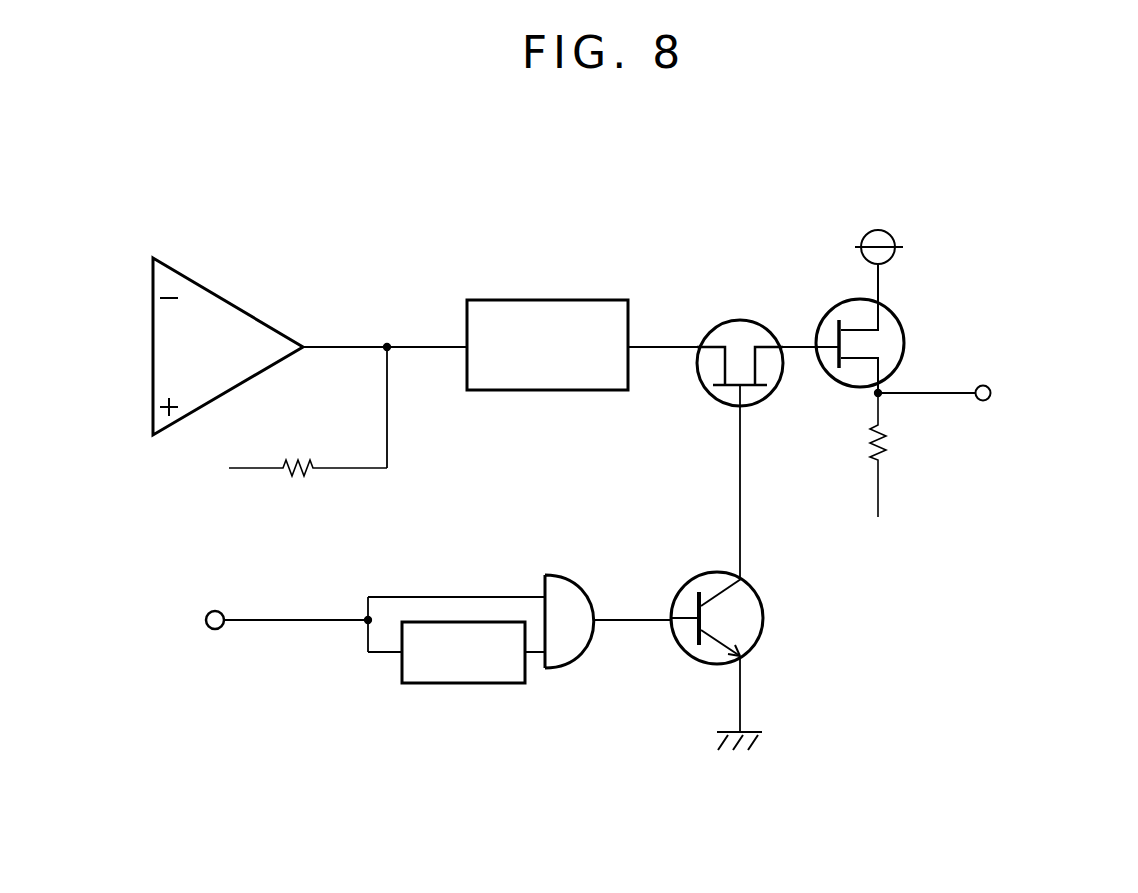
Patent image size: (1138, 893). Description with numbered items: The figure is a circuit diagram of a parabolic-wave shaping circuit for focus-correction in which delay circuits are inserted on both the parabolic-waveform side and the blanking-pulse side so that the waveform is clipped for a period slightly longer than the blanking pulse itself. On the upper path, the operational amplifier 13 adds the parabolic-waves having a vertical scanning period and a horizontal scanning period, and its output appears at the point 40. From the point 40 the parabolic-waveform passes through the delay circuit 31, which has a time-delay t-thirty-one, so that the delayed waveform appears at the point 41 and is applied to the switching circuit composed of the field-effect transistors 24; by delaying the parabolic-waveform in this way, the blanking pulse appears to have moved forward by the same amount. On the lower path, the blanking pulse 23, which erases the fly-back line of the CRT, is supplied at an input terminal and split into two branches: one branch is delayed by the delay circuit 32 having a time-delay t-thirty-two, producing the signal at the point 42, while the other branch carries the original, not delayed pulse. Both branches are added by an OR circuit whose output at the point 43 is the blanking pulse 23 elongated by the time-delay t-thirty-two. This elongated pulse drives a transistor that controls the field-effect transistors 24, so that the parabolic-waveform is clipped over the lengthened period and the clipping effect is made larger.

The operational amplifier 13 is at (253, 316).
The point of the circuit 40 is at (387, 347).
The delay circuit 31 is at (565, 300).
The point of the circuit 41 is at (660, 347).
The field-effect transistors 24 is at (838, 300).
The point of the circuit 43 is at (632, 618).
The blanking pulse 23 is at (300, 620).
The delay circuit 32 is at (443, 683).
The point of the circuit 42 is at (538, 652).